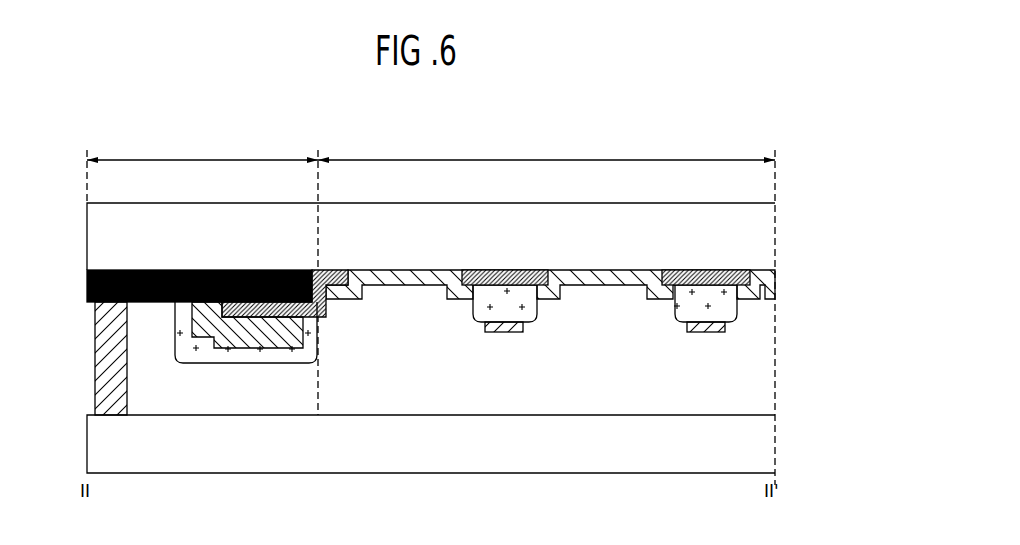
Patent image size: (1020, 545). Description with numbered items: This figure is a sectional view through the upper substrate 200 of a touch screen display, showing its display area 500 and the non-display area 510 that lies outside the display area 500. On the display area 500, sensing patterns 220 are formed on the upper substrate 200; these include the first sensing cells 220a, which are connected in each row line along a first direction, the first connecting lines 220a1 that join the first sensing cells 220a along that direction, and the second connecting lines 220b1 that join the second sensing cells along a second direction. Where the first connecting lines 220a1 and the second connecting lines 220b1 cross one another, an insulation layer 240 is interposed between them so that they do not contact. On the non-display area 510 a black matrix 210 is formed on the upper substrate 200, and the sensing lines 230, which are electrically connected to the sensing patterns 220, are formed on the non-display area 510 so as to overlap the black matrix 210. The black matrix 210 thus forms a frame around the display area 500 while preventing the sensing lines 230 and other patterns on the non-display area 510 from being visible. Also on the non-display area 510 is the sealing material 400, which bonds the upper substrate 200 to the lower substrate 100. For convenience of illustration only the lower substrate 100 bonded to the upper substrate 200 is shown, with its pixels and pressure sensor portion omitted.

The lower substrate 100 is at (775, 441).
The upper substrate 200 is at (775, 229).
The black matrix 210 is at (87, 284).
The sensing patterns 220 is at (563, 303).
The first sensing cells 220a is at (770, 291).
The first connecting lines 220a1 is at (762, 277).
The second connecting lines 220b1 is at (725, 323).
The sensing lines 230 is at (192, 309).
The insulation layer 240 is at (188, 347).
The sealing material 400 is at (100, 378).
The display area 500 is at (546, 149).
The non-display area 510 is at (202, 149).